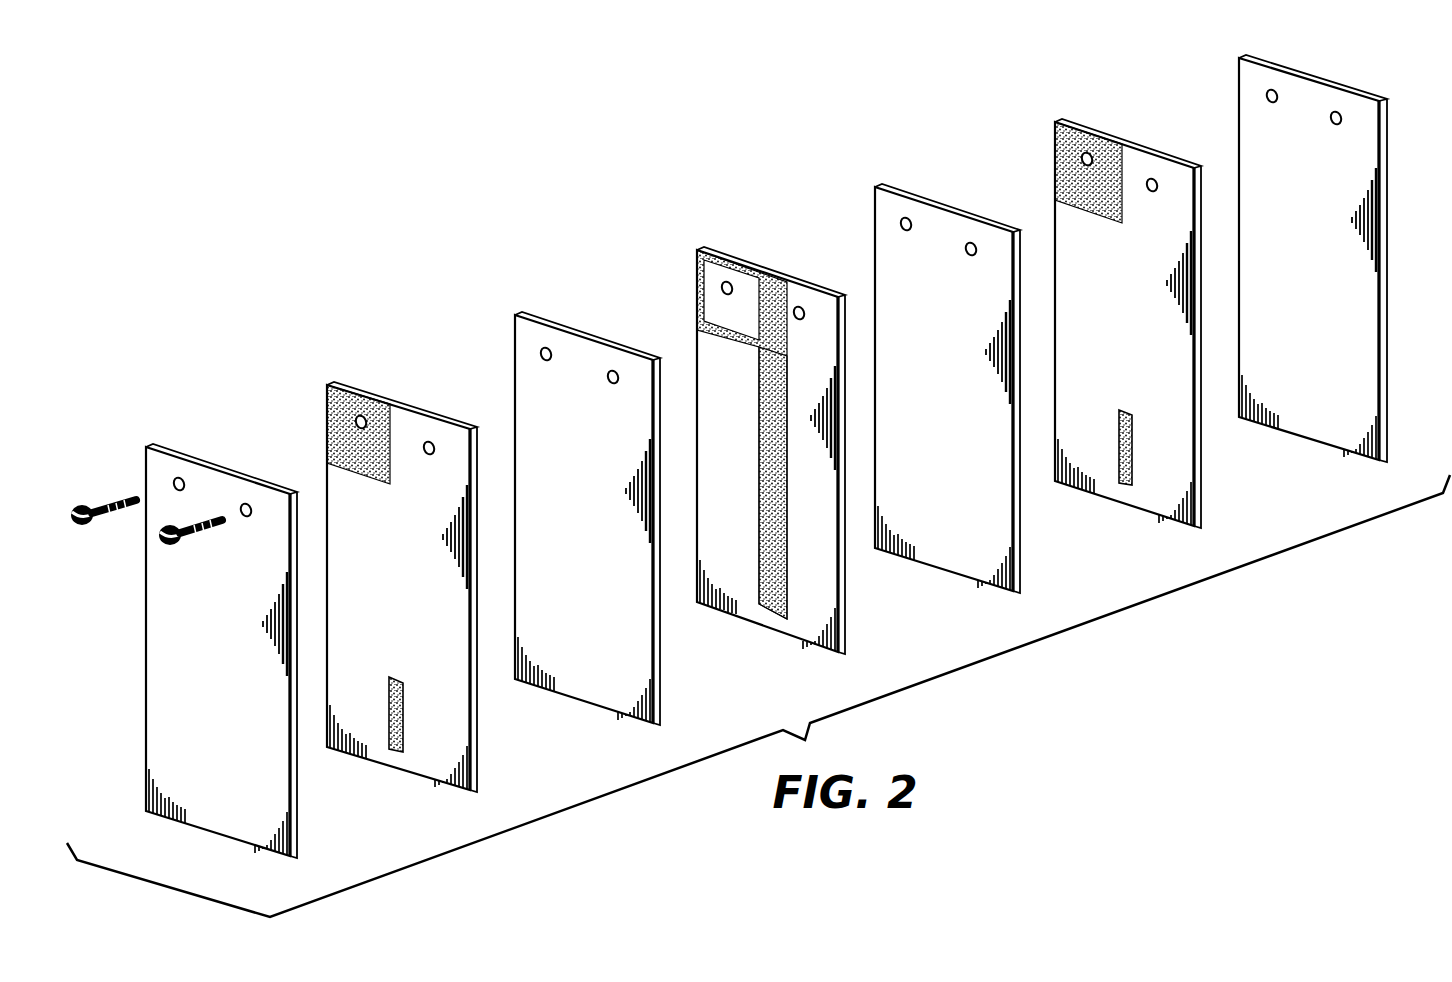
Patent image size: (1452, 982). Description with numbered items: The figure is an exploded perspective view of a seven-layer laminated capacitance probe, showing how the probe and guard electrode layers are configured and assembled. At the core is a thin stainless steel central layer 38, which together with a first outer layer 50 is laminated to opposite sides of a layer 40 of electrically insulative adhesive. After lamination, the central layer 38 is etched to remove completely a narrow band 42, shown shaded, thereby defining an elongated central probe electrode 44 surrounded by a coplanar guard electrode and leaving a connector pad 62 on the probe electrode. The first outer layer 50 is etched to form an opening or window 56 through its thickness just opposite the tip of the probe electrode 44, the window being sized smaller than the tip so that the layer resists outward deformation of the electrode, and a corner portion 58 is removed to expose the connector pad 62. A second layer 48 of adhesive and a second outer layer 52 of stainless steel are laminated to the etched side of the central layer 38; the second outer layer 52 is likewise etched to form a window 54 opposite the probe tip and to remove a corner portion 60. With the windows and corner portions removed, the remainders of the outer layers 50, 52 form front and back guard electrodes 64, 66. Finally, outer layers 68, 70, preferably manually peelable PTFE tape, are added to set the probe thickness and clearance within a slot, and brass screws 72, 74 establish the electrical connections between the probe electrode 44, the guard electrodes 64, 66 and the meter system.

The central layer 38 is at (807, 432).
The layer of electrically insulative adhesive 40 is at (1023, 539).
The narrow band 42 is at (798, 290).
The elongated central probe electrode 44 is at (770, 558).
The second layer of adhesive 48 is at (665, 654).
The first outer layer 50 is at (1163, 324).
The second outer layer 52 is at (437, 572).
The opening or window 54 is at (384, 693).
The opening or window 56 is at (1121, 485).
The corner portion 58 is at (1104, 151).
The corner portion 60 is at (379, 415).
The connector pad 62 is at (746, 296).
The front guard electrode 64 is at (1181, 420).
The back guard electrode 66 is at (457, 677).
The outer layer 68 is at (1387, 366).
The outer layer 70 is at (297, 788).
The screw 72 is at (118, 523).
The screw 74 is at (207, 535).